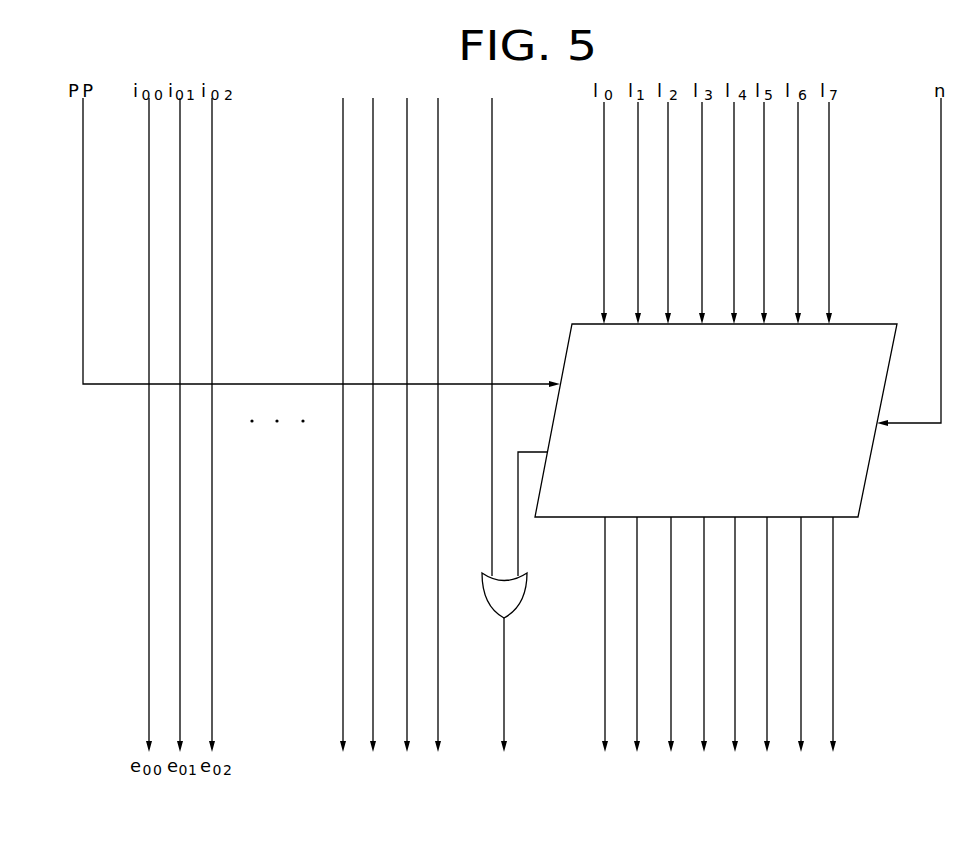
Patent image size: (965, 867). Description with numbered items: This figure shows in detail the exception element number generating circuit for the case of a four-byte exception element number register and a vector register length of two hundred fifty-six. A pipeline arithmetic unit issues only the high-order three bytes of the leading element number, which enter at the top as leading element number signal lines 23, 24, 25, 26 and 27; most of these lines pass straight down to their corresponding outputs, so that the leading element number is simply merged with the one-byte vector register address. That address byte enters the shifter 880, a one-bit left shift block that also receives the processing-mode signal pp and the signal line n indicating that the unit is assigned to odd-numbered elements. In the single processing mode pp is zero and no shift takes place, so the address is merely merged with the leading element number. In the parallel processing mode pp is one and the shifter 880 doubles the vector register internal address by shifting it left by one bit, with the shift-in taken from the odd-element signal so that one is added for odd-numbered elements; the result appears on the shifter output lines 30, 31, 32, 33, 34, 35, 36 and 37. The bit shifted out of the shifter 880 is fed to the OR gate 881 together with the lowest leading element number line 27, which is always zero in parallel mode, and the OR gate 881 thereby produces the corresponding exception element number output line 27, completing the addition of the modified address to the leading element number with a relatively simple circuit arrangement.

The shifter 880 is at (852, 518).
The OR gate 881 is at (518, 606).
The leading element number signal line i23 23 is at (341, 429).
The leading element number signal line i24 24 is at (377, 429).
The leading element number signal line i25 25 is at (411, 429).
The leading element number signal line i26 26 is at (445, 429).
The signal line i27 / output e27 27 is at (500, 429).
The shifter output e30 30 is at (608, 647).
The shifter output e31 31 is at (641, 647).
The shifter output e32 32 is at (675, 647).
The shifter output e33 33 is at (709, 647).
The shifter output e34 34 is at (743, 647).
The shifter output e35 35 is at (774, 647).
The shifter output e36 36 is at (808, 647).
The shifter output e37 37 is at (841, 647).